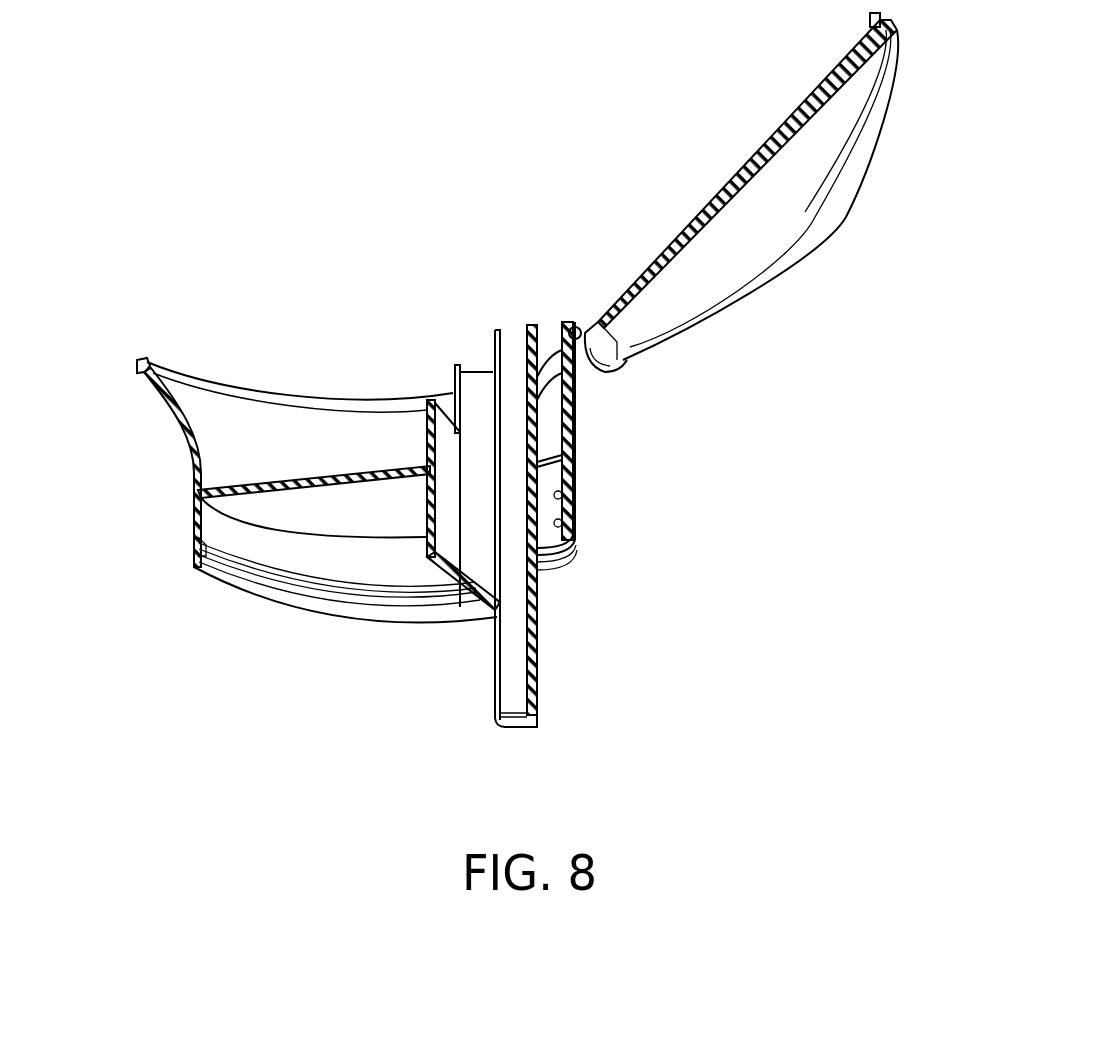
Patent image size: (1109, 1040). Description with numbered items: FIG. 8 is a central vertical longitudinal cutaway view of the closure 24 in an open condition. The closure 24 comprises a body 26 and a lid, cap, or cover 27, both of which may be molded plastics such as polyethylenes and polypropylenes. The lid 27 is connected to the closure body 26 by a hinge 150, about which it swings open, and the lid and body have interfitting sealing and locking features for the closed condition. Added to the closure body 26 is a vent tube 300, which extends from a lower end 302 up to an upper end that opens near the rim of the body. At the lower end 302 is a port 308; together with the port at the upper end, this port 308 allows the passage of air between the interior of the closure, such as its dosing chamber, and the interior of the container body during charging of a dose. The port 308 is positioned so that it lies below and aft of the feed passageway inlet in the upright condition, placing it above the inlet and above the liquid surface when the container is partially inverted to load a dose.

The closure 24 is at (712, 517).
The body 26 is at (165, 493).
The lid 27 is at (806, 279).
The hinge 150 is at (616, 381).
The vent tube 300 is at (575, 626).
The lower end 302 is at (510, 733).
The port 308 is at (553, 715).